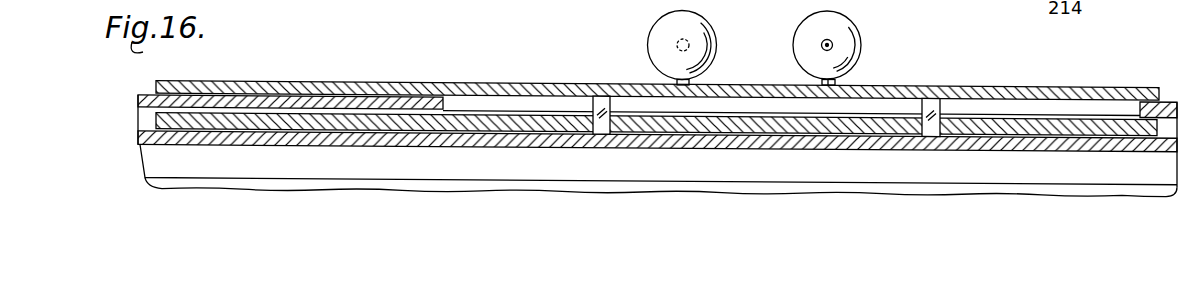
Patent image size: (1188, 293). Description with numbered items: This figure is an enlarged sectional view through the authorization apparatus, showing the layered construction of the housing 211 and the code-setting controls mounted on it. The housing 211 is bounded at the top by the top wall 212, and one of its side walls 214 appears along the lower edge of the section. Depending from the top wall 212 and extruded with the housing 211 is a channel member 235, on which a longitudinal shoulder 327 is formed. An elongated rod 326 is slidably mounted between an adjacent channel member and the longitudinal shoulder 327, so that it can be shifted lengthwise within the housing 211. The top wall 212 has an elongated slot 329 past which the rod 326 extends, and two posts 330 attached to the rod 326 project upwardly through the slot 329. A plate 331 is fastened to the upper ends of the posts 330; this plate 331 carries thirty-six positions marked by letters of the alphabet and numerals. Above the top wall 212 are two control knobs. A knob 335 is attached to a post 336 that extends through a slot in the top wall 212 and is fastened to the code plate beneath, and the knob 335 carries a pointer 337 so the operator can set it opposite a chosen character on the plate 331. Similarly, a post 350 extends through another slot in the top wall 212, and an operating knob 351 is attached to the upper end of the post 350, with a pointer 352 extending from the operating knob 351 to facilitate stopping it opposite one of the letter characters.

The housing 211 is at (138, 99).
The top wall 212 is at (207, 98).
The side wall 214 is at (172, 186).
The channel member 235 is at (152, 163).
The elongated rod 326 is at (139, 122).
The longitudinal shoulder 327 is at (1116, 130).
The elongated slot 329 is at (497, 104).
The post 330 is at (603, 131).
The plate 331 is at (323, 85).
The knob 335 is at (845, 38).
The post 336 is at (830, 86).
The pointer 337 is at (832, 42).
The post 350 is at (683, 86).
The operating knob 351 is at (656, 52).
The pointer 352 is at (676, 41).